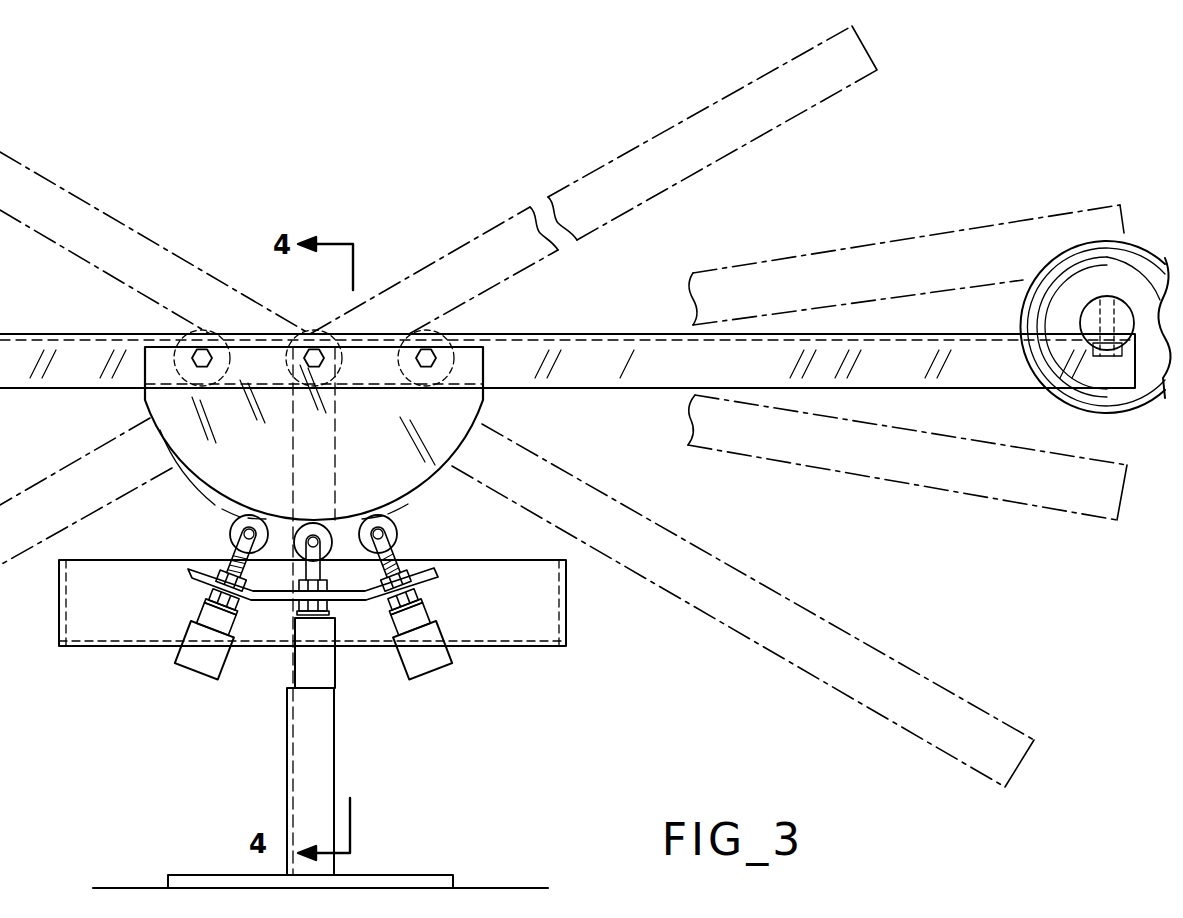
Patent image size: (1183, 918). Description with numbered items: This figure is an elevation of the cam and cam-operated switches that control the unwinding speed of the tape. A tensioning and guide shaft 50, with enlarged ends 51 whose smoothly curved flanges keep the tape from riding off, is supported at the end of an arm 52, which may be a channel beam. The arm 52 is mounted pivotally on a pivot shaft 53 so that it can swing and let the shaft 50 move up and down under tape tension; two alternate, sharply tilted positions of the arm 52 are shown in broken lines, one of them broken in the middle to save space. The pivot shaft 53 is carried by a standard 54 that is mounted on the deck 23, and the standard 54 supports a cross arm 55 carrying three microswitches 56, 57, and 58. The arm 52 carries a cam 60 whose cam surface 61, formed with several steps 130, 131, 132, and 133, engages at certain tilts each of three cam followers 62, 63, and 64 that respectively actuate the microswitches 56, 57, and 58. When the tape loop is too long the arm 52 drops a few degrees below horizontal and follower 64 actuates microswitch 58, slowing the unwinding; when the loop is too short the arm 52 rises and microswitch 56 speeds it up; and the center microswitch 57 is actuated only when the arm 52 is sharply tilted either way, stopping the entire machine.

The deck 23 is at (497, 888).
The tensioning and guide shaft 50 is at (1098, 305).
The enlarged ends 51 is at (1063, 258).
The arm 52 is at (724, 157).
The pivot shaft 53 is at (310, 358).
The standard 54 is at (295, 783).
The cross arm 55 is at (552, 633).
The microswitch 56 is at (190, 656).
The microswitch 57 is at (295, 673).
The microswitch 58 is at (435, 656).
The cam 60 is at (237, 457).
The cam surface 61 is at (193, 485).
The cam follower 62 is at (232, 538).
The cam follower 63 is at (328, 530).
The cam follower 64 is at (395, 534).
The step 130 is at (228, 510).
The step 131 is at (256, 518).
The step 132 is at (379, 516).
The step 133 is at (405, 503).